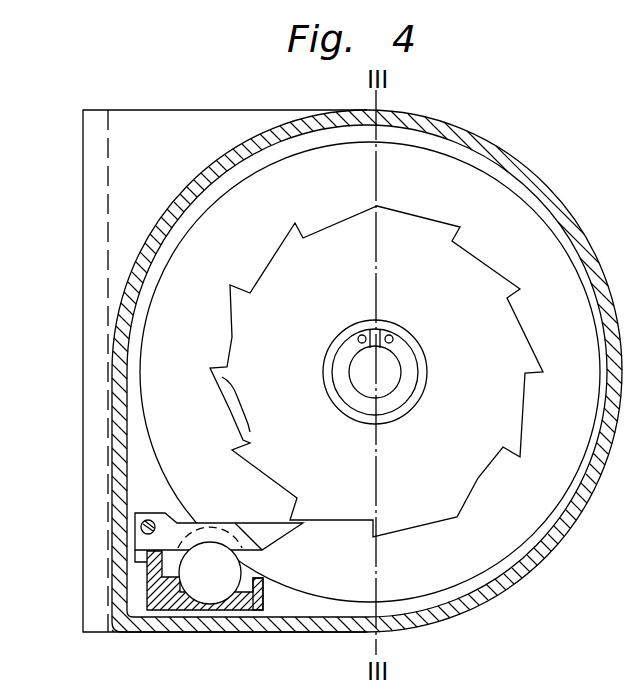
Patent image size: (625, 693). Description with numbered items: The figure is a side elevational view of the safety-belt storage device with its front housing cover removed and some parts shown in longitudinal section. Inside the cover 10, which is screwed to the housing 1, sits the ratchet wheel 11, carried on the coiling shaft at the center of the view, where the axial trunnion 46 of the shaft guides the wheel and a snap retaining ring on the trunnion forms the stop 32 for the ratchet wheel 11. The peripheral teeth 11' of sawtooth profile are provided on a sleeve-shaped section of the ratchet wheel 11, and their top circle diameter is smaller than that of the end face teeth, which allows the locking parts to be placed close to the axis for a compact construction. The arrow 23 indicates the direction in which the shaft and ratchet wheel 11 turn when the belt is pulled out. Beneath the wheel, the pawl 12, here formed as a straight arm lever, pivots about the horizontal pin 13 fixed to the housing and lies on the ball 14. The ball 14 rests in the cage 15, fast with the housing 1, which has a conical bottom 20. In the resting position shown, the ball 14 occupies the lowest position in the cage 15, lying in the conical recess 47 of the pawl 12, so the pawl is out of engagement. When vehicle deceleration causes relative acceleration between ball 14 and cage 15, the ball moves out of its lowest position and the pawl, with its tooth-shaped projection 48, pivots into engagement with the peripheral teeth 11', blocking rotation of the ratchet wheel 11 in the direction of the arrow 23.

The housing 1 is at (168, 122).
The cover 10 is at (118, 358).
The ratchet wheel 11 is at (370, 400).
The peripheral teeth 11' is at (253, 404).
The pawl 12 is at (142, 546).
The pin 13 is at (141, 530).
The ball 14 is at (224, 588).
The cage 15 is at (247, 600).
The conical bottom 20 is at (182, 600).
The arrow 23 is at (450, 284).
The stop 32 is at (410, 357).
The axial trunnion 46 is at (383, 385).
The conical recess 47 is at (211, 526).
The tooth-shaped projection 48 is at (280, 538).